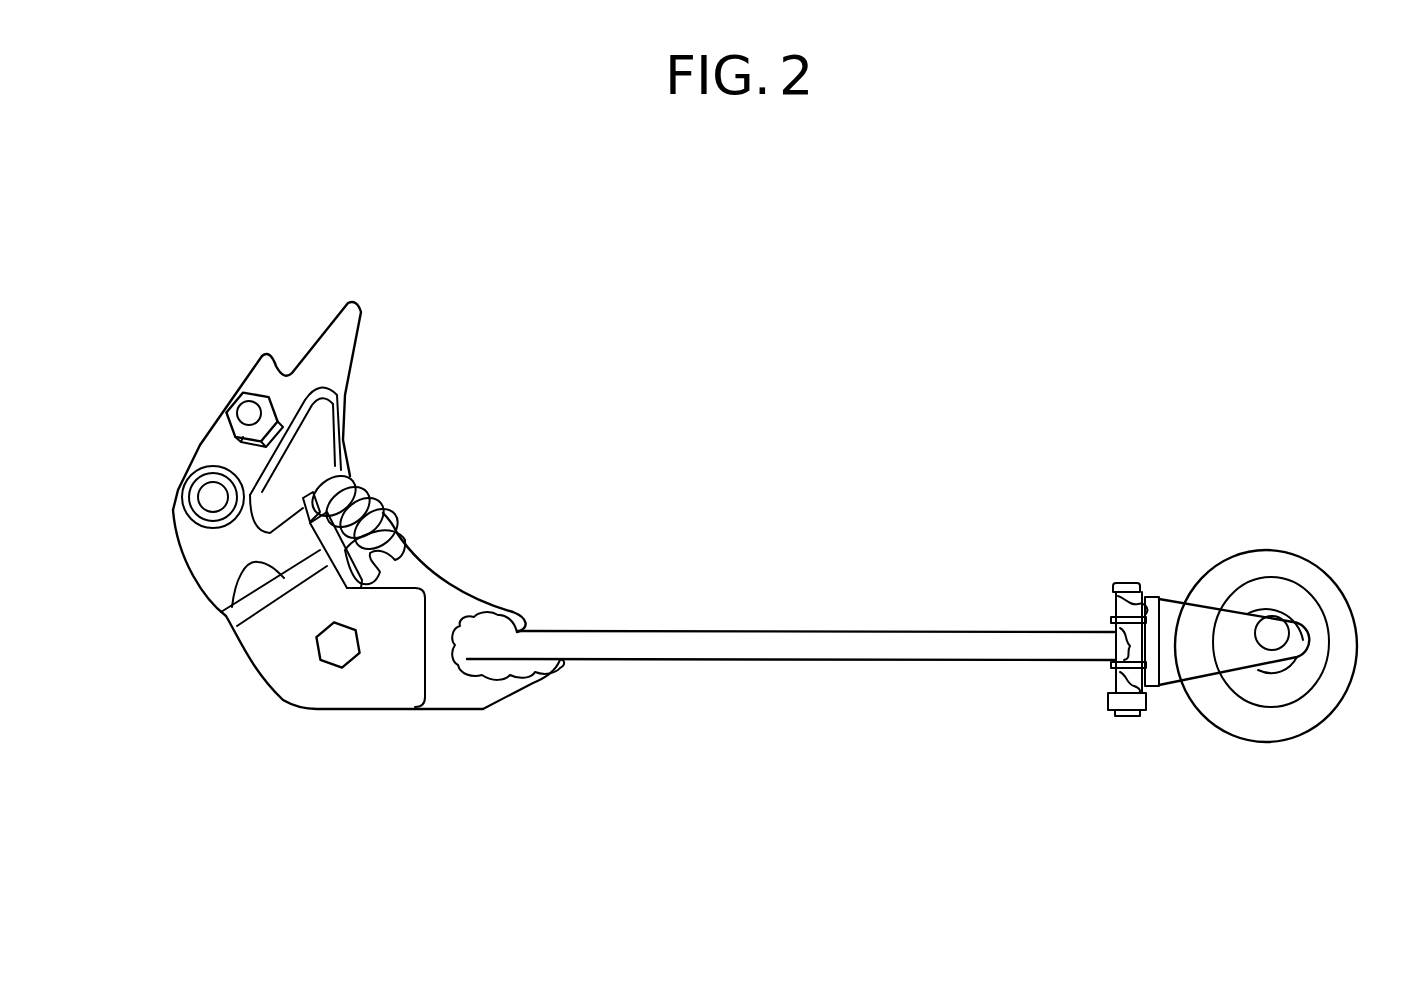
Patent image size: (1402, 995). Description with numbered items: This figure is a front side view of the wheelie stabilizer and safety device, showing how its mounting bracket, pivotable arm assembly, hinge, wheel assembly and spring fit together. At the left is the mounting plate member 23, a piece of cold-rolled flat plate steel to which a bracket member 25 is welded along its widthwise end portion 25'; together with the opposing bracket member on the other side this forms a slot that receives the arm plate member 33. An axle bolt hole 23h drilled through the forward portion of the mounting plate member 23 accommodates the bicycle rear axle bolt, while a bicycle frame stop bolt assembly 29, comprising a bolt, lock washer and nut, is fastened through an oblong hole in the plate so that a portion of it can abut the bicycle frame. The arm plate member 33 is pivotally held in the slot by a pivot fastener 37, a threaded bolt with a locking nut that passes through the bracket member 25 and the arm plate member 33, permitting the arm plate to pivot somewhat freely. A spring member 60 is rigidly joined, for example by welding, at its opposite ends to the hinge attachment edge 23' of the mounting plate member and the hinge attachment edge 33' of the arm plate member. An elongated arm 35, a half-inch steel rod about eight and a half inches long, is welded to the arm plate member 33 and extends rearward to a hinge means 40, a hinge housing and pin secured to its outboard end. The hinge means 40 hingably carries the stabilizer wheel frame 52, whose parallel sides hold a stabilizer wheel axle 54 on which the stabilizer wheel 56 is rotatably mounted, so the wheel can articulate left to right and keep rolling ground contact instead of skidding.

The mounting plate member 23 is at (310, 406).
The hinge attachment edge of mounting plate member 23' is at (343, 460).
The axle bolt hole 23h is at (213, 496).
The bracket member 25 is at (328, 628).
The end portion of bracket member 25' is at (230, 607).
The bicycle frame stop bolt assembly 29 is at (250, 386).
The arm plate member 33 is at (473, 609).
The hinge attachment edge of arm plate member 33' is at (417, 530).
The elongated arm 35 is at (817, 638).
The pivot fastener 37 is at (345, 645).
The hinge means 40 is at (1127, 590).
The stabilizer wheel frame 52 is at (1220, 625).
The stabilizer wheel axle 54 is at (1270, 633).
The stabilizer wheel 56 is at (1327, 595).
The spring member 60 is at (388, 517).